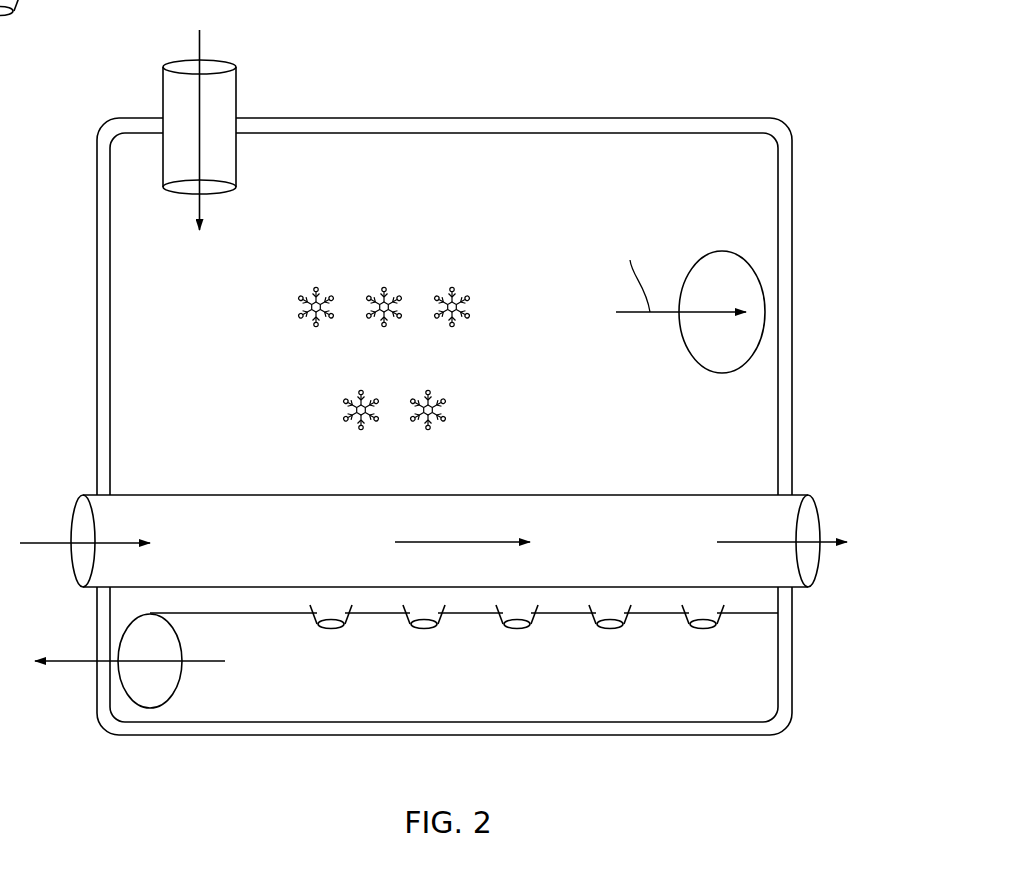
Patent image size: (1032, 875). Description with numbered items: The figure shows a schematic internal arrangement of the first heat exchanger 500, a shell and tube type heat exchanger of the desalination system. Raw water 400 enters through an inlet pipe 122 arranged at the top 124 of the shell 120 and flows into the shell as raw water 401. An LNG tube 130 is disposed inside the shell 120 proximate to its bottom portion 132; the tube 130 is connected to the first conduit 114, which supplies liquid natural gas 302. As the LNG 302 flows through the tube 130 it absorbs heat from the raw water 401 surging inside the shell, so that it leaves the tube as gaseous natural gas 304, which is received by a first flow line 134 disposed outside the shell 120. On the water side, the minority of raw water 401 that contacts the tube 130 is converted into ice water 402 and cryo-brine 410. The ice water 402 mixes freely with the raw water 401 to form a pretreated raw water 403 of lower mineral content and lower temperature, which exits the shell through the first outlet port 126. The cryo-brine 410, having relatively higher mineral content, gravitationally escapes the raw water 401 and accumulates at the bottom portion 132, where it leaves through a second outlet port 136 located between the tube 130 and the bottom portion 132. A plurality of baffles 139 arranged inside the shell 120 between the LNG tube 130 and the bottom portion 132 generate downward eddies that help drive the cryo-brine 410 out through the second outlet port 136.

The first heat exchanger 500 is at (786, 62).
The shell 120 is at (789, 197).
The inlet pipe 122 is at (238, 100).
The top of the shell 124 is at (409, 135).
The first outlet port 126 is at (769, 314).
The LNG tube 130 is at (737, 494).
The bottom portion of the shell 132 is at (448, 720).
The first flow line 134 is at (800, 590).
The second outlet port 136 is at (150, 709).
The baffles 139 is at (257, 620).
The first conduit 114 is at (88, 493).
The liquid natural gas 302 is at (50, 549).
The gaseous natural gas 304 is at (827, 548).
The raw water 400 is at (202, 58).
The raw water inside the shell 401 is at (201, 202).
The ice water 402 is at (394, 290).
The pretreated raw water 403 is at (638, 316).
The cryo-brine 410 is at (72, 670).